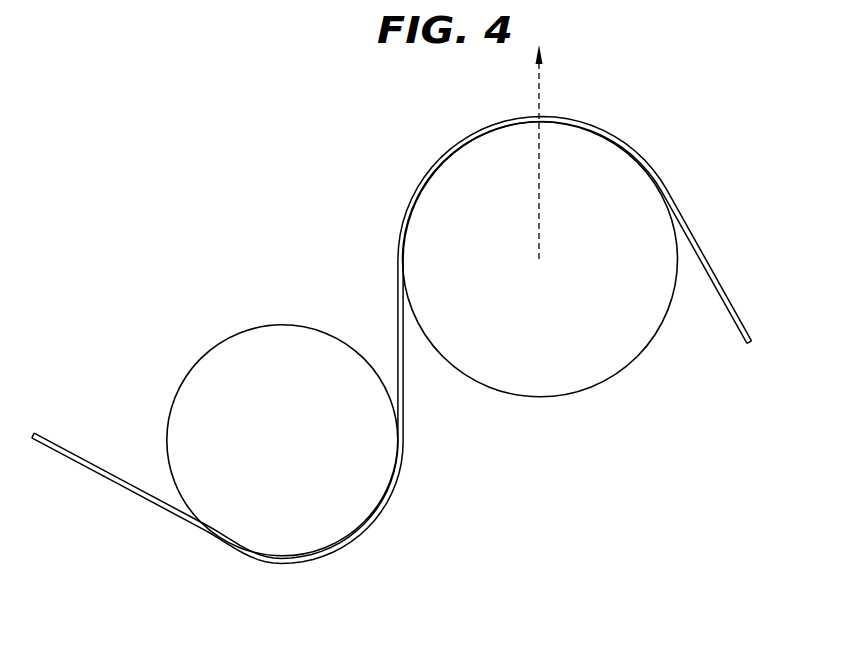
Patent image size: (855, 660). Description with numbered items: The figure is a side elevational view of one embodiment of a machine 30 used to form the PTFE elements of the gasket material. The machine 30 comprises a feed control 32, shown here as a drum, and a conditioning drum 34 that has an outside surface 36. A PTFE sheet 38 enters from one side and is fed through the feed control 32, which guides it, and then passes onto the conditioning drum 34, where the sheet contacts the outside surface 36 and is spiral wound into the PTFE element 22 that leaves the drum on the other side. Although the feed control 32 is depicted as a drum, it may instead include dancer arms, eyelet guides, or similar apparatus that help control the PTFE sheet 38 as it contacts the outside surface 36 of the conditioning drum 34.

The PTFE element 22 is at (747, 325).
The machine 30 is at (391, 148).
The feed control 32 is at (233, 340).
The conditioning drum 34 is at (653, 338).
The outside surface 36 is at (597, 387).
The PTFE sheet 38 is at (105, 482).